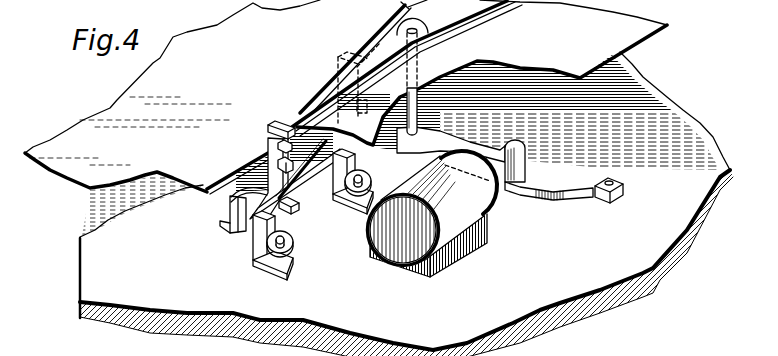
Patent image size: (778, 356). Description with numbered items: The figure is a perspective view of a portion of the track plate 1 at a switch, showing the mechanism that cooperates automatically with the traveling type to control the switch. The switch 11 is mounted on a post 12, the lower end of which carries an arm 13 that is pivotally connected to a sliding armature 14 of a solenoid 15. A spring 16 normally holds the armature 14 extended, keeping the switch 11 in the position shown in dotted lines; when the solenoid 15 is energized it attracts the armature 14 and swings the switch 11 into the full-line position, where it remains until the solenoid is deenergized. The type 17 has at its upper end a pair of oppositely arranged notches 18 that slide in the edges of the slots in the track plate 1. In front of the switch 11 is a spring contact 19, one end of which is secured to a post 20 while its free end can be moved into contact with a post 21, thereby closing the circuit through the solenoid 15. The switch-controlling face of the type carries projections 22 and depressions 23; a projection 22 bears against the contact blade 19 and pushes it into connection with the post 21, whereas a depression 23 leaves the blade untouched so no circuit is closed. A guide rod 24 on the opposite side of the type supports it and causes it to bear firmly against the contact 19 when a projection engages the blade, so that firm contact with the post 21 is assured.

The track plate 1 is at (80, 172).
The switch 11 is at (380, 48).
The post 12 is at (418, 110).
The arm 13 is at (433, 143).
The sliding armature 14 is at (526, 160).
The solenoid 15 is at (432, 213).
The spring 16 is at (568, 191).
The type 17 is at (238, 160).
The notches 18 is at (279, 160).
The spring contact 19 is at (316, 175).
The post 20 is at (262, 258).
The post 21 is at (347, 167).
The projections 22 is at (315, 122).
The depressions 23 is at (268, 175).
The guide rod 24 is at (262, 181).